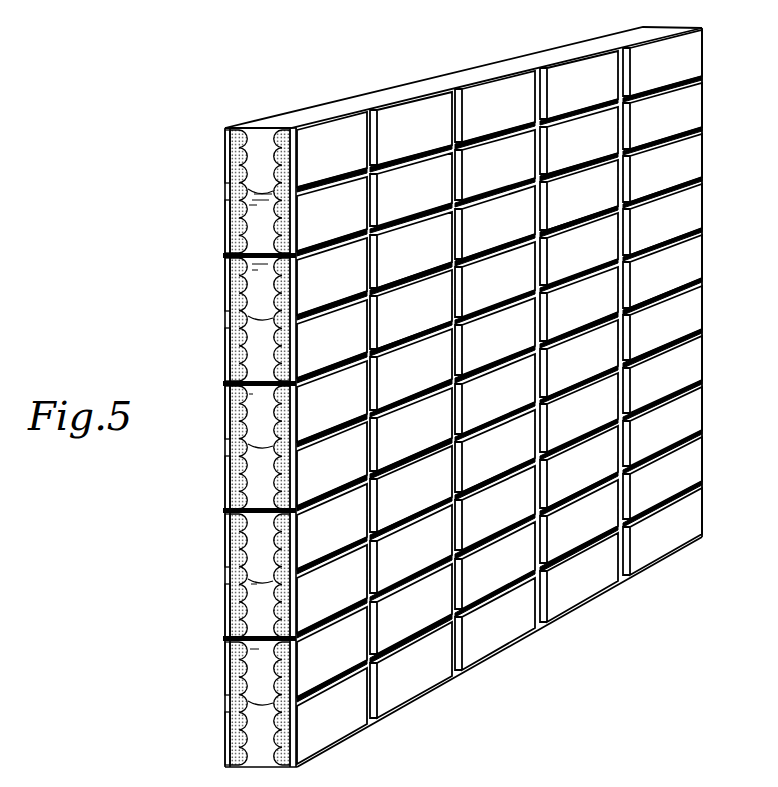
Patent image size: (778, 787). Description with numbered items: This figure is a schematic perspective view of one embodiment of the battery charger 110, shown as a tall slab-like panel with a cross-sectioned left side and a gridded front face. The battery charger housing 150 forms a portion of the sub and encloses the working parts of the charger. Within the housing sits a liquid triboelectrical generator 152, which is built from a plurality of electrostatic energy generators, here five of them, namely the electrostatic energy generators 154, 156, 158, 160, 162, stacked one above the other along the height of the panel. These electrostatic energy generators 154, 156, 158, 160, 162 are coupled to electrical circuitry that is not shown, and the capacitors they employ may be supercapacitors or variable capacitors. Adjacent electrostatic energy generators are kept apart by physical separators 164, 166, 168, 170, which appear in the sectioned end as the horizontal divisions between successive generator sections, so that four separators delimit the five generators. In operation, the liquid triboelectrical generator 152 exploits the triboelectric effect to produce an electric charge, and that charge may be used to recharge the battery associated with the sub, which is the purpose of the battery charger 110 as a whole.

The battery charger 110 is at (196, 128).
The battery charger housing 150 is at (668, 27).
The liquid triboelectrical generator 152 is at (316, 100).
The electrostatic energy generator 154 is at (228, 188).
The electrostatic energy generator 156 is at (228, 320).
The electrostatic energy generator 158 is at (228, 448).
The electrostatic energy generator 160 is at (228, 575).
The electrostatic energy generator 162 is at (228, 703).
The physical separator 164 is at (228, 256).
The physical separator 166 is at (228, 384).
The physical separator 168 is at (228, 511).
The physical separator 170 is at (228, 640).